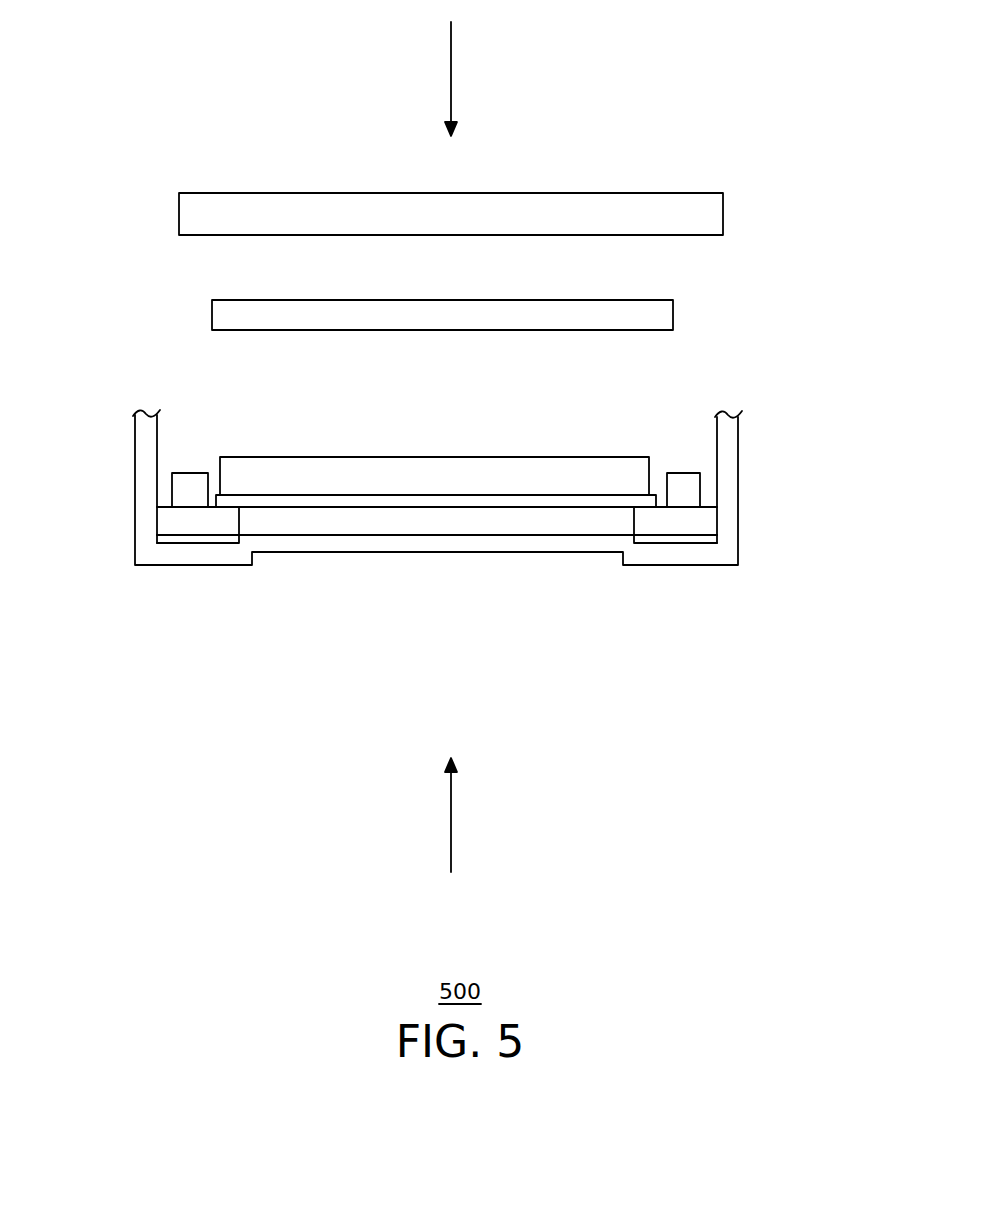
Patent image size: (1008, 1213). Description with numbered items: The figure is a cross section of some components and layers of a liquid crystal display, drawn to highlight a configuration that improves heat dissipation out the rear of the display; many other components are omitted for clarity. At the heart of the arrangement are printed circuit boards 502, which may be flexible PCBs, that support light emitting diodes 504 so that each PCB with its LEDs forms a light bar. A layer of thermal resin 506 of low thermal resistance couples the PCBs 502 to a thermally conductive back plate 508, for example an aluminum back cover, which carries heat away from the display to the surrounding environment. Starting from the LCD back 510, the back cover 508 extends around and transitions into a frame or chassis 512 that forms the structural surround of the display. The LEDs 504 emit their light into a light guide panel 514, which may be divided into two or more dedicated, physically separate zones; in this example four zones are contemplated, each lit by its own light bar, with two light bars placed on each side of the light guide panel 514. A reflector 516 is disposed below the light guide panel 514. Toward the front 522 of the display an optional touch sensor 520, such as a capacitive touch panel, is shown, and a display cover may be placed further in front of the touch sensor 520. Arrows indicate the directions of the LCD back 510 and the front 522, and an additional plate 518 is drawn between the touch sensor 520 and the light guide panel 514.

The PCB 502 is at (207, 522).
The LED 504 is at (187, 482).
The thermal resin 506 is at (178, 538).
The back plate 508 is at (440, 542).
The LCD back 510 is at (452, 810).
The frame or chassis 512 is at (145, 442).
The light guide panel 514 is at (556, 472).
The reflector 516 is at (602, 500).
The lower plate 518 is at (600, 312).
The touch sensor 520 is at (578, 210).
The front 522 is at (452, 60).